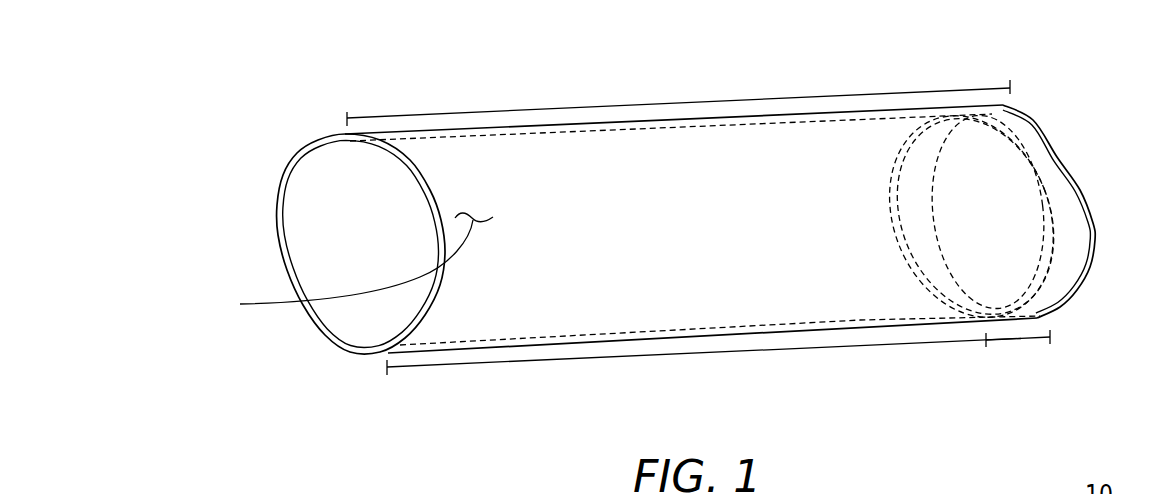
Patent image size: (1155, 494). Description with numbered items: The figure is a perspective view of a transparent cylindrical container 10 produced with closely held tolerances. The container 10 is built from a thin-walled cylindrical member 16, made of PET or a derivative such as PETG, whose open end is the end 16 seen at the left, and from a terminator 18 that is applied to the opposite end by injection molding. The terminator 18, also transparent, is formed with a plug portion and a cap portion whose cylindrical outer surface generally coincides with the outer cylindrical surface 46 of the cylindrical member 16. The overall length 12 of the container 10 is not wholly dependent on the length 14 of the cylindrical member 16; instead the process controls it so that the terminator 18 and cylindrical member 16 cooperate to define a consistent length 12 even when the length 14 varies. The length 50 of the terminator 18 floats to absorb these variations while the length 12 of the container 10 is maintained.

The cylindrical container 10 is at (1051, 87).
The length of the container 12 is at (672, 102).
The length of the cylindrical member 14 is at (708, 355).
The cylindrical member 16 is at (318, 332).
The terminator 18 is at (1021, 331).
The outer cylindrical surface of the cylindrical member 46 is at (350, 266).
The length of the terminator 50 is at (1001, 341).